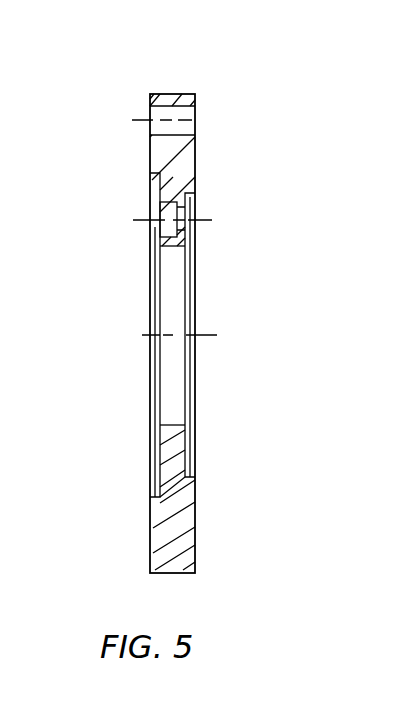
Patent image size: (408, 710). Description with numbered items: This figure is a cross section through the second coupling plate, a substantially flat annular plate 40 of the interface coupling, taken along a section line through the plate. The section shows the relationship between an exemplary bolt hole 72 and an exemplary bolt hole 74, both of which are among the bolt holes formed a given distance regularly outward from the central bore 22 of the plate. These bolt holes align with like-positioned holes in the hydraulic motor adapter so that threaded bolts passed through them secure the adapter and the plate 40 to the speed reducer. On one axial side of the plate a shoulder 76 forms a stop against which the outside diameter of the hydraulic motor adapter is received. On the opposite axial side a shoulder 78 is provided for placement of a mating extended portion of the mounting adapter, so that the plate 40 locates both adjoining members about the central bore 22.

The second coupling plate 40 is at (108, 535).
The bolt hole 74 is at (195, 118).
The bolt hole 72 is at (160, 208).
The shoulder 78 is at (153, 480).
The shoulder 76 is at (196, 470).
The central bore 22 is at (170, 424).